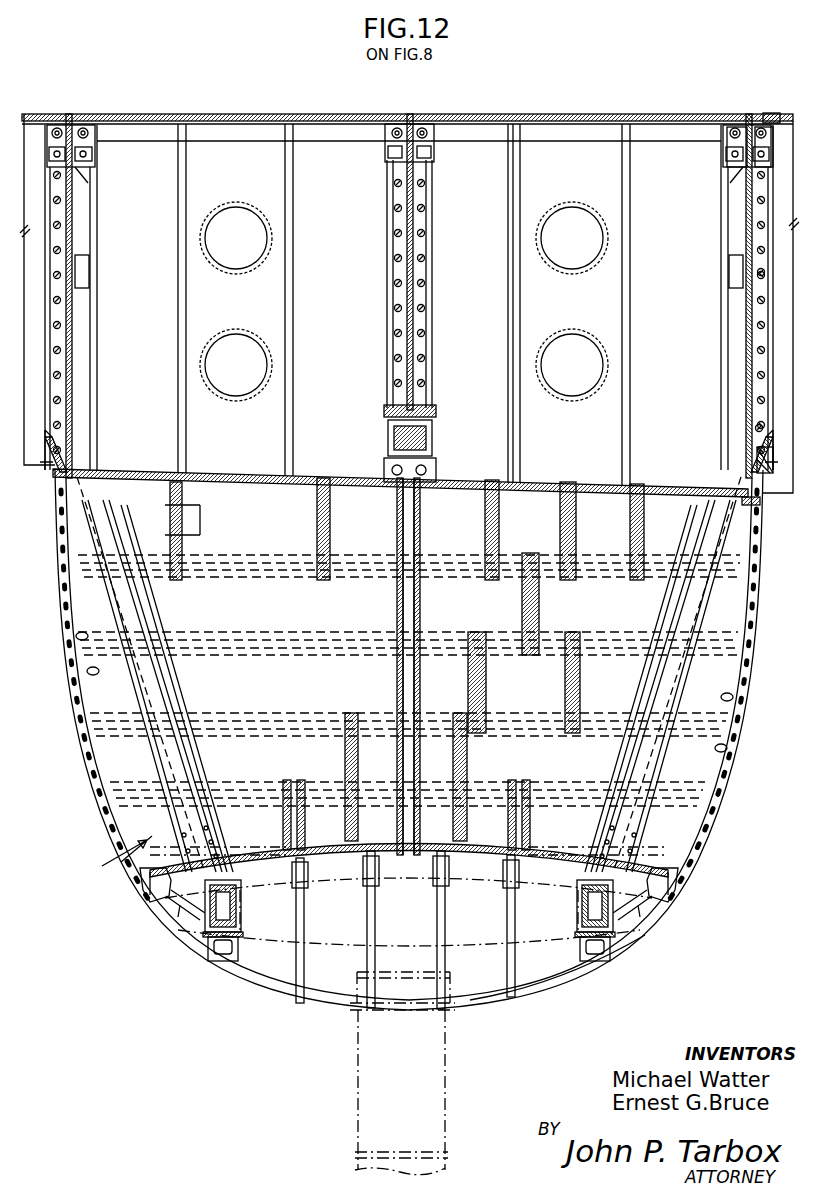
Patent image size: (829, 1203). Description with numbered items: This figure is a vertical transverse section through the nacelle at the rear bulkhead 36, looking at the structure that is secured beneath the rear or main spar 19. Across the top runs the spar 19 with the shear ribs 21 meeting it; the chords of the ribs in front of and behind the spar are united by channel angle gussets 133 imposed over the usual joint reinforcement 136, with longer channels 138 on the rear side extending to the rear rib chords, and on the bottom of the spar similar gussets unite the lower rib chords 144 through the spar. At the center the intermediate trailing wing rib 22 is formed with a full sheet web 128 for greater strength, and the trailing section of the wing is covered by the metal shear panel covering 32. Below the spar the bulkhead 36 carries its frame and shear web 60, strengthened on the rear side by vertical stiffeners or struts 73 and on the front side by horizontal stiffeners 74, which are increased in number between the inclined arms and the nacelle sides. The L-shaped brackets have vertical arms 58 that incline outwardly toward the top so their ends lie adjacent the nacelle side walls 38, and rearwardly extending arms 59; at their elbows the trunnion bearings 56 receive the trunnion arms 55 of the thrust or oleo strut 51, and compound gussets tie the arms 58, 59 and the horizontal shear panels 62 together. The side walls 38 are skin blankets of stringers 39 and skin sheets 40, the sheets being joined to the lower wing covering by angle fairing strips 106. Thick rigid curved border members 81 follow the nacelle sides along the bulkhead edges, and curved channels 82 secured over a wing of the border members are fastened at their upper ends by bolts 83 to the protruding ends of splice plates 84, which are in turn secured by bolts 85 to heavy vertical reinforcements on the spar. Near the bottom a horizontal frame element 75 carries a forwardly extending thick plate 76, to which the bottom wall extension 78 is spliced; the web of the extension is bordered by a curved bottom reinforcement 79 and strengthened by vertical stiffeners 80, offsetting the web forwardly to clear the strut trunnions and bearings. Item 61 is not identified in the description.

The metal shear panel covering 32 is at (499, 121).
The rear longer channels 138 is at (757, 117).
The channel angle gussets 133 is at (728, 150).
The joint reinforcement 136 is at (396, 192).
The shear ribs 21 is at (72, 217).
The intermediate trailing wing rib 22 is at (415, 246).
The rear or main spar 19 is at (352, 296).
The full sheet web 128 is at (422, 318).
The splice plates 84 is at (93, 443).
The bolts 85 is at (761, 425).
The lower rib chords 144 is at (773, 474).
The angle fairing strips 106 is at (757, 504).
The bolts 83 is at (753, 562).
The frame and shear web 60 is at (293, 610).
The vertical stiffeners or struts 73 is at (408, 612).
The horizontal stiffeners 74 is at (312, 653).
The vertical arm 58 is at (137, 668).
The curved border members 81 is at (78, 637).
The curved channels 82 is at (95, 672).
The stressed skin side walls 38 is at (75, 732).
The stringers 39 is at (717, 773).
The skin sheets 40 is at (713, 815).
The rear bulkhead 36 is at (374, 856).
The fitting 61 is at (165, 886).
The horizontal shear panels 62 is at (197, 918).
The rearwardly extending arm 59 is at (245, 907).
The trunnion arms 55 is at (277, 935).
The trunnion bearings 56 is at (222, 960).
The horizontal frame element 75 is at (472, 838).
The thick plate 76 is at (345, 874).
The bottom wall extension 78 is at (475, 985).
The vertical stiffeners 80 is at (505, 982).
The curved bottom reinforcement 79 is at (552, 978).
The thrust or oleo strut 51 is at (366, 1103).